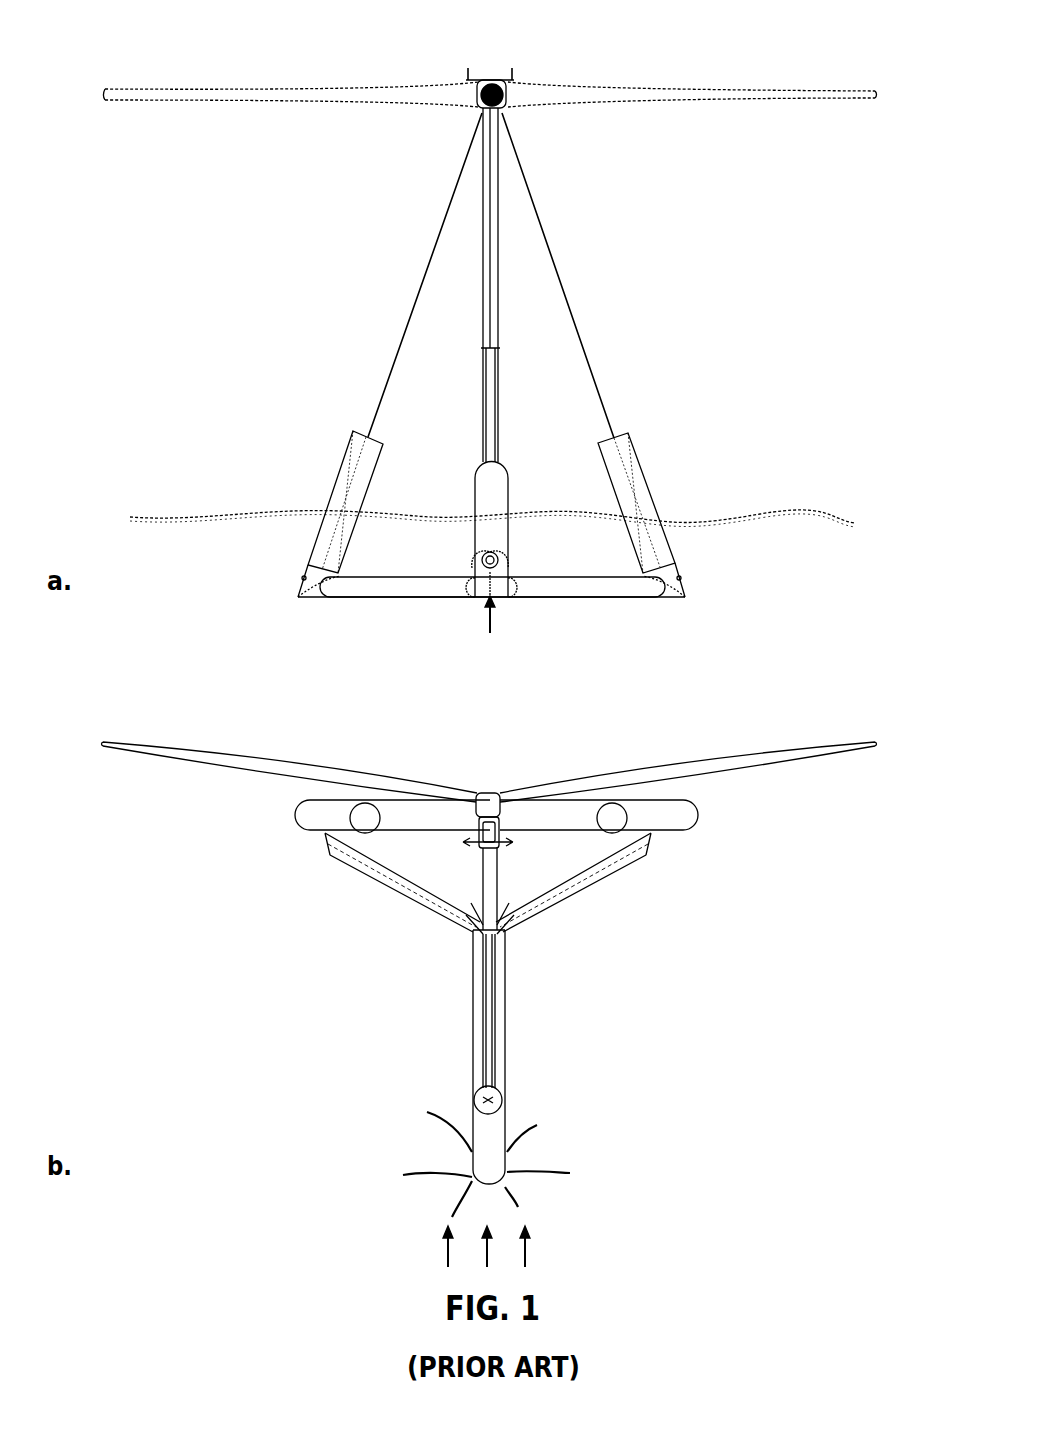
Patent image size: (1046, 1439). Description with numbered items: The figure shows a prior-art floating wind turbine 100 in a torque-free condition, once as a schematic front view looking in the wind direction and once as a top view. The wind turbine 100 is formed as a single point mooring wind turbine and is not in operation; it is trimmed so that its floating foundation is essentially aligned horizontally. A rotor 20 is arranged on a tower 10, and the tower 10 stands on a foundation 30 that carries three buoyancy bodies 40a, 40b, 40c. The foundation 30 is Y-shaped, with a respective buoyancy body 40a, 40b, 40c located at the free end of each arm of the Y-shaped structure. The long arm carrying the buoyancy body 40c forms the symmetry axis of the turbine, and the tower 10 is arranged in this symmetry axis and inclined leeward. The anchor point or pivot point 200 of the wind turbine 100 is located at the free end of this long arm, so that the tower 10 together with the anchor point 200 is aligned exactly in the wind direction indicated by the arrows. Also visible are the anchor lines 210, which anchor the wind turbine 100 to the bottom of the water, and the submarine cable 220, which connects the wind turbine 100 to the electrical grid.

The tower 10 is at (490, 865).
The rotor 20 is at (494, 82).
The foundation 30 is at (350, 600).
The buoyancy body 40a is at (353, 447).
The buoyancy body 40b is at (633, 478).
The buoyancy body 40c is at (498, 531).
The floating wind turbine 100 is at (240, 324).
The anchor point 200 is at (478, 598).
The anchor lines 210 is at (497, 598).
The submarine cable 220 is at (487, 600).